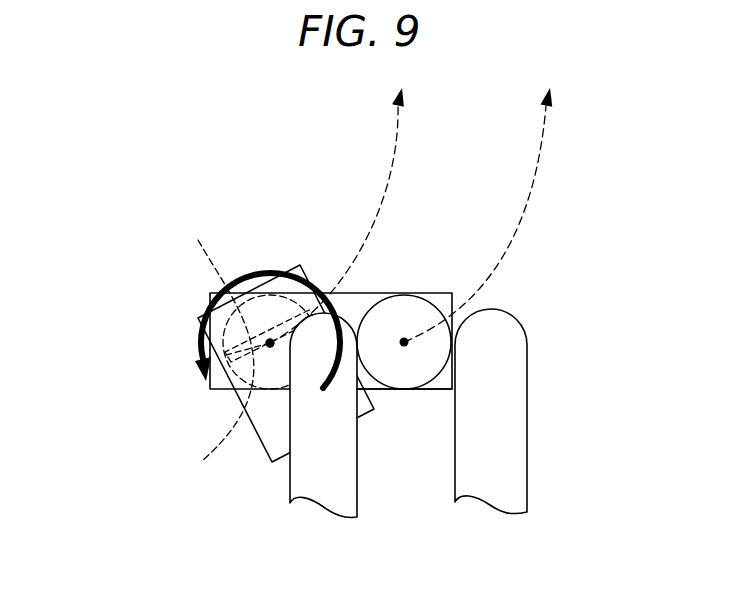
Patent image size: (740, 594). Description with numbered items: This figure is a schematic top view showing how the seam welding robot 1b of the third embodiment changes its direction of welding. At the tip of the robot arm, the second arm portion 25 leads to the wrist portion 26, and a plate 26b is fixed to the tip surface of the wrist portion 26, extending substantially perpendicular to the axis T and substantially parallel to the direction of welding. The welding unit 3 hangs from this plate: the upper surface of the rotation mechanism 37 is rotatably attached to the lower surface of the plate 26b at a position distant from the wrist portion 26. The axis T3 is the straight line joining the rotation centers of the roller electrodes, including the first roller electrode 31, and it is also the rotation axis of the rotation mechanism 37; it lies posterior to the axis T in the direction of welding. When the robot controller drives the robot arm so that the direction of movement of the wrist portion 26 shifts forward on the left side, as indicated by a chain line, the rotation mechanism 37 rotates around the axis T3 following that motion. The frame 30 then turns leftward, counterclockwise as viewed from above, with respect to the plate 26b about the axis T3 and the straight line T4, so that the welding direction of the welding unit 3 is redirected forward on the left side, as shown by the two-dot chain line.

The seam welding robot 1b is at (168, 172).
The welding unit 3 is at (178, 424).
The second arm portion 25 is at (513, 460).
The wrist portion 26 is at (427, 318).
The plate 26b is at (435, 392).
The frame 30 is at (255, 430).
The first roller electrode 31 is at (253, 391).
The rotation mechanism 37 is at (221, 337).
The axis T is at (404, 342).
The axis T3 is at (270, 343).
The straight line T4 is at (289, 275).